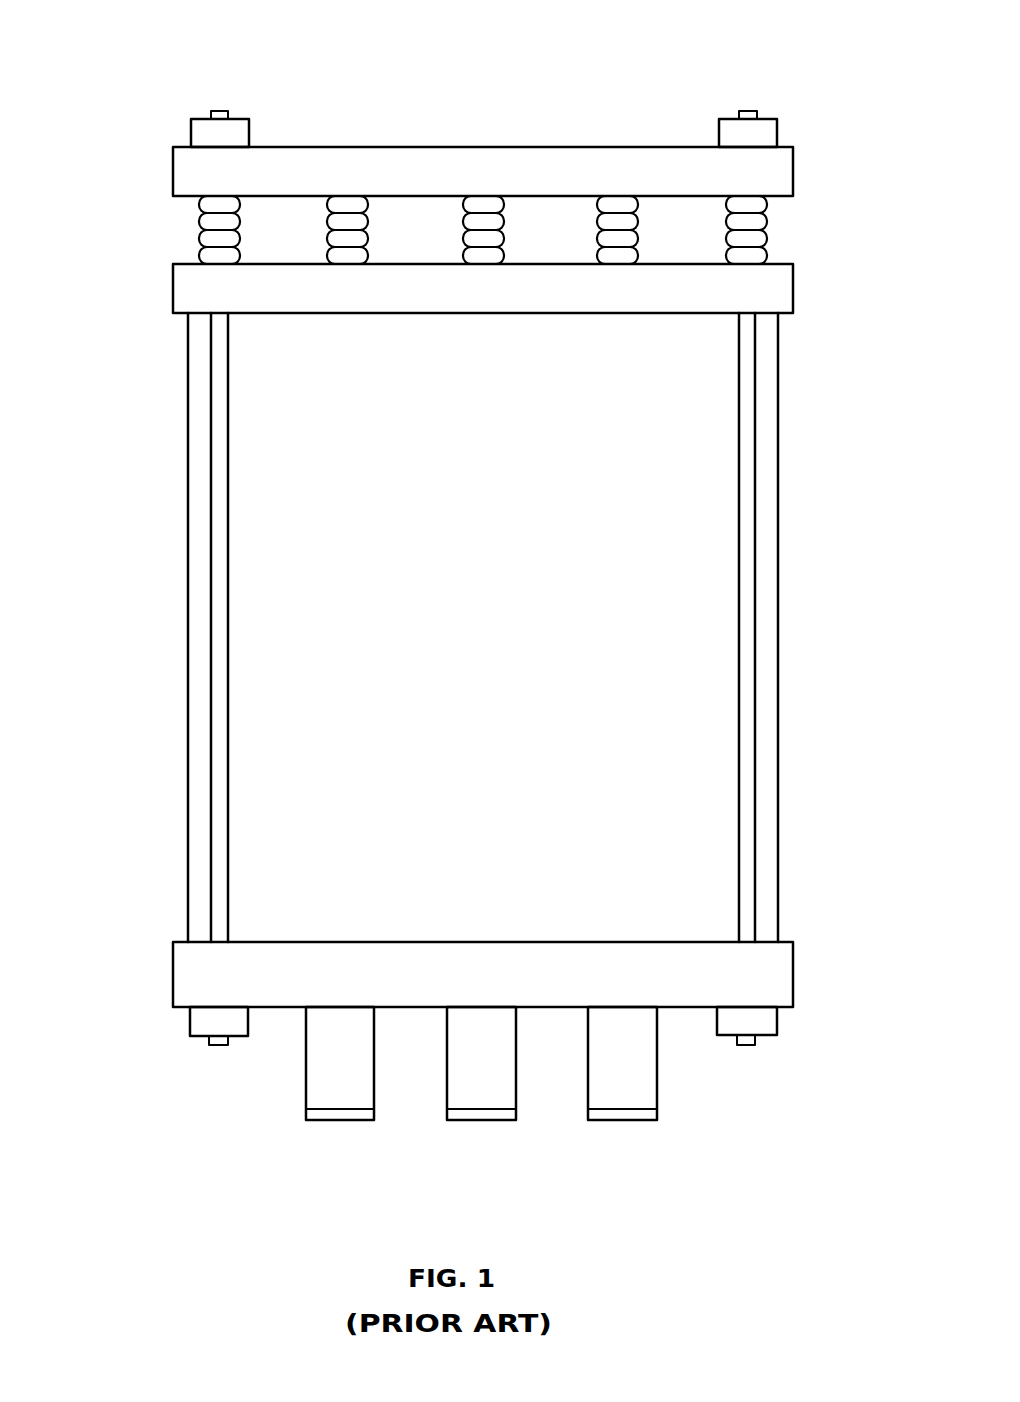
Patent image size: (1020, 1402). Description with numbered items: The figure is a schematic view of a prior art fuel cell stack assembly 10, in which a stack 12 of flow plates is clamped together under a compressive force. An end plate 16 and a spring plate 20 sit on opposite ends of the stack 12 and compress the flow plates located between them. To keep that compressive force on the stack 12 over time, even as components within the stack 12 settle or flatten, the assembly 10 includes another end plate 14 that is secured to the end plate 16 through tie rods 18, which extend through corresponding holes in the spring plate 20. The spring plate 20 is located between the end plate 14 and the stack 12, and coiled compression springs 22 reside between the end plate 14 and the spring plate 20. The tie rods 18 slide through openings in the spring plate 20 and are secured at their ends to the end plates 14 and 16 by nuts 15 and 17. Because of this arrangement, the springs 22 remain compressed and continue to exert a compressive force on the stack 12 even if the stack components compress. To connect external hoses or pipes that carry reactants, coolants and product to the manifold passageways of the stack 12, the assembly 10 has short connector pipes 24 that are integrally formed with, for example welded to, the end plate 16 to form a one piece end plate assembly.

The fuel cell stack assembly 10 is at (645, 86).
The stack 12 is at (777, 647).
The end plate 14 is at (785, 177).
The nuts 15 is at (248, 125).
The end plate 16 is at (787, 977).
The nuts 17 is at (192, 1028).
The tie rods 18 is at (217, 647).
The spring plate 20 is at (185, 297).
The coiled compression springs 22 is at (207, 237).
The pipes 24 is at (335, 1105).